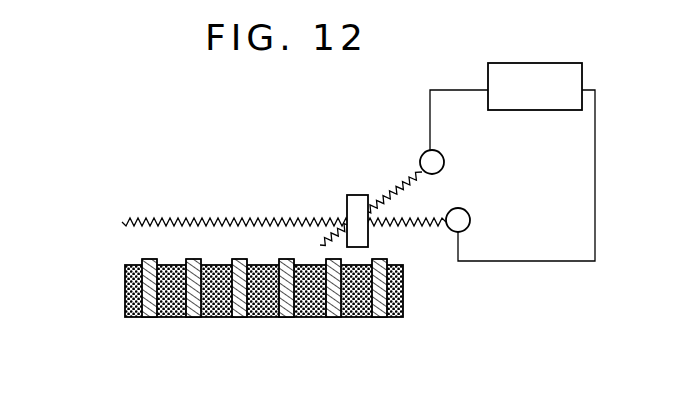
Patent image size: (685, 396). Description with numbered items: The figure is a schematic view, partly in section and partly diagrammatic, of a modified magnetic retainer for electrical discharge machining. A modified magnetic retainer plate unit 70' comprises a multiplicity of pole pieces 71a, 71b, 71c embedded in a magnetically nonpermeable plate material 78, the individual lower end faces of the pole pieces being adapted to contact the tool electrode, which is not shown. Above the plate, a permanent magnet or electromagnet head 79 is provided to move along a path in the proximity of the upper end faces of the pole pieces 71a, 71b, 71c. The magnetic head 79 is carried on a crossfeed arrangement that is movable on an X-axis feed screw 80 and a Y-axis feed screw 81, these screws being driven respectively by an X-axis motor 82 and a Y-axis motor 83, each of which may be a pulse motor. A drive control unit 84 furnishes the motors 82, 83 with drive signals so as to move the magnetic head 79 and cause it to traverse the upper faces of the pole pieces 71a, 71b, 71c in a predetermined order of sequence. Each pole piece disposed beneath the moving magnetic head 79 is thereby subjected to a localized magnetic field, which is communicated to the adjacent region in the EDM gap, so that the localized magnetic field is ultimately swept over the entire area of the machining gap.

The modified magnetic retainer plate unit 70' is at (296, 291).
The pole piece 71a is at (142, 293).
The pole piece 71b is at (193, 317).
The pole piece 71c is at (242, 317).
The magnetically nonpermeable plate material 78 is at (165, 313).
The permanent magnet or electromagnet head 79 is at (348, 196).
The X-axis feed screw 80 is at (192, 218).
The Y-axis feed screw 81 is at (400, 187).
The X-axis motor 82 is at (470, 221).
The Y-axis motor 83 is at (444, 163).
The drive control unit 84 is at (527, 63).